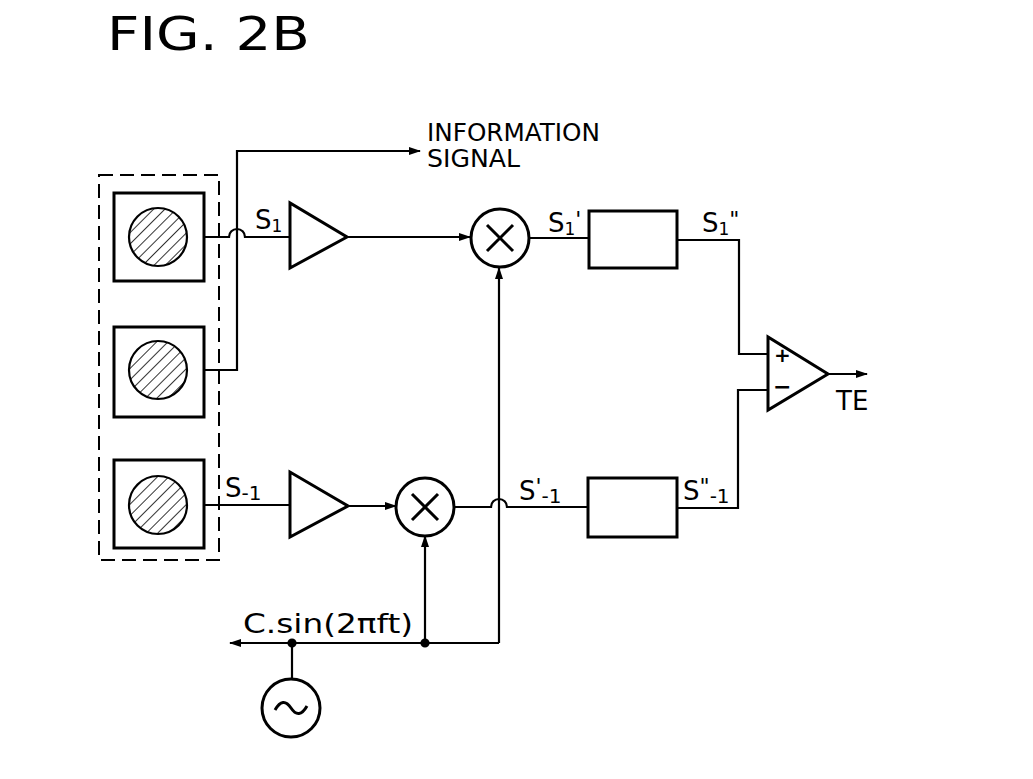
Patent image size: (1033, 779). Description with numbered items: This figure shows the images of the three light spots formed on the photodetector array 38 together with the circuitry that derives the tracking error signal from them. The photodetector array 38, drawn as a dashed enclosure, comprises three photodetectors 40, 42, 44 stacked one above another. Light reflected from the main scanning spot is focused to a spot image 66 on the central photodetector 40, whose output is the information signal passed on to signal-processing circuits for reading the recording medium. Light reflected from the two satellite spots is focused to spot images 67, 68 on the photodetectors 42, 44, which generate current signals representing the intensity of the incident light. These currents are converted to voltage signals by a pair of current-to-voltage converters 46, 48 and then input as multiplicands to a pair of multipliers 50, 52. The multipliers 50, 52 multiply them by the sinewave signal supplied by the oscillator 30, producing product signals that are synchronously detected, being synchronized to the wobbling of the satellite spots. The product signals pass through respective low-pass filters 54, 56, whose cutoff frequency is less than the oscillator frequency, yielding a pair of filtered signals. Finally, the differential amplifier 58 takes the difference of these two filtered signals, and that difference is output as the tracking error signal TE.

The oscillator 30 is at (322, 707).
The photodetector array 38 is at (137, 172).
The photodetector 40 is at (118, 377).
The photodetector 42 is at (114, 240).
The photodetector 44 is at (115, 520).
The current-to-voltage converter 46 is at (322, 235).
The current-to-voltage converter 48 is at (308, 490).
The multiplier 50 is at (477, 228).
The multiplier 52 is at (430, 485).
The low-pass filter 54 is at (663, 220).
The low-pass filter 56 is at (635, 487).
The differential amplifier 58 is at (800, 355).
The spot image 66 is at (165, 344).
The spot image 67 is at (163, 212).
The spot image 68 is at (155, 532).